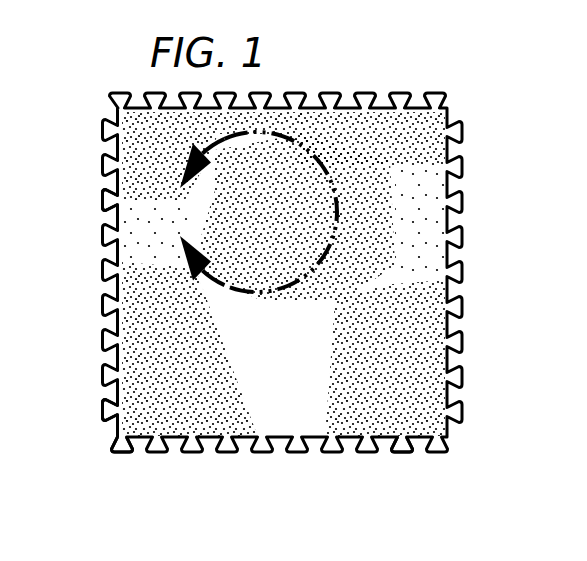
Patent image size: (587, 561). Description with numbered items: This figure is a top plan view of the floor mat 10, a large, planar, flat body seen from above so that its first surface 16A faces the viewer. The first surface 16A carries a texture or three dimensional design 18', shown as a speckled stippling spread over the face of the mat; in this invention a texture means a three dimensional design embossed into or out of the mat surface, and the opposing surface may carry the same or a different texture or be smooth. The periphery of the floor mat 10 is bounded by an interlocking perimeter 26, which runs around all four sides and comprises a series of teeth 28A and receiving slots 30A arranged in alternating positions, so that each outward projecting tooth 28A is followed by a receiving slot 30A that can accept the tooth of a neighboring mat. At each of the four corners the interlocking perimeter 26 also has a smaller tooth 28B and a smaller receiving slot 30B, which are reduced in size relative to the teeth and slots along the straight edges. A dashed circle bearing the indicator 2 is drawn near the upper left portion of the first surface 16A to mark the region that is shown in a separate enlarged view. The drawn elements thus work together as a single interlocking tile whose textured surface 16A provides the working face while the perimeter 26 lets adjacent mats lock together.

The floor mat 10 is at (384, 70).
The first surface 16A is at (412, 248).
The texture or three dimensional design 18' is at (409, 138).
The FIG. 2 section view indicator 2 is at (251, 212).
The teeth 28A is at (112, 195).
The receiving slots 30A is at (108, 204).
The smaller tooth 28B is at (108, 438).
The smaller receiving slot 30B is at (120, 441).
The interlocking perimeter 26 is at (415, 452).